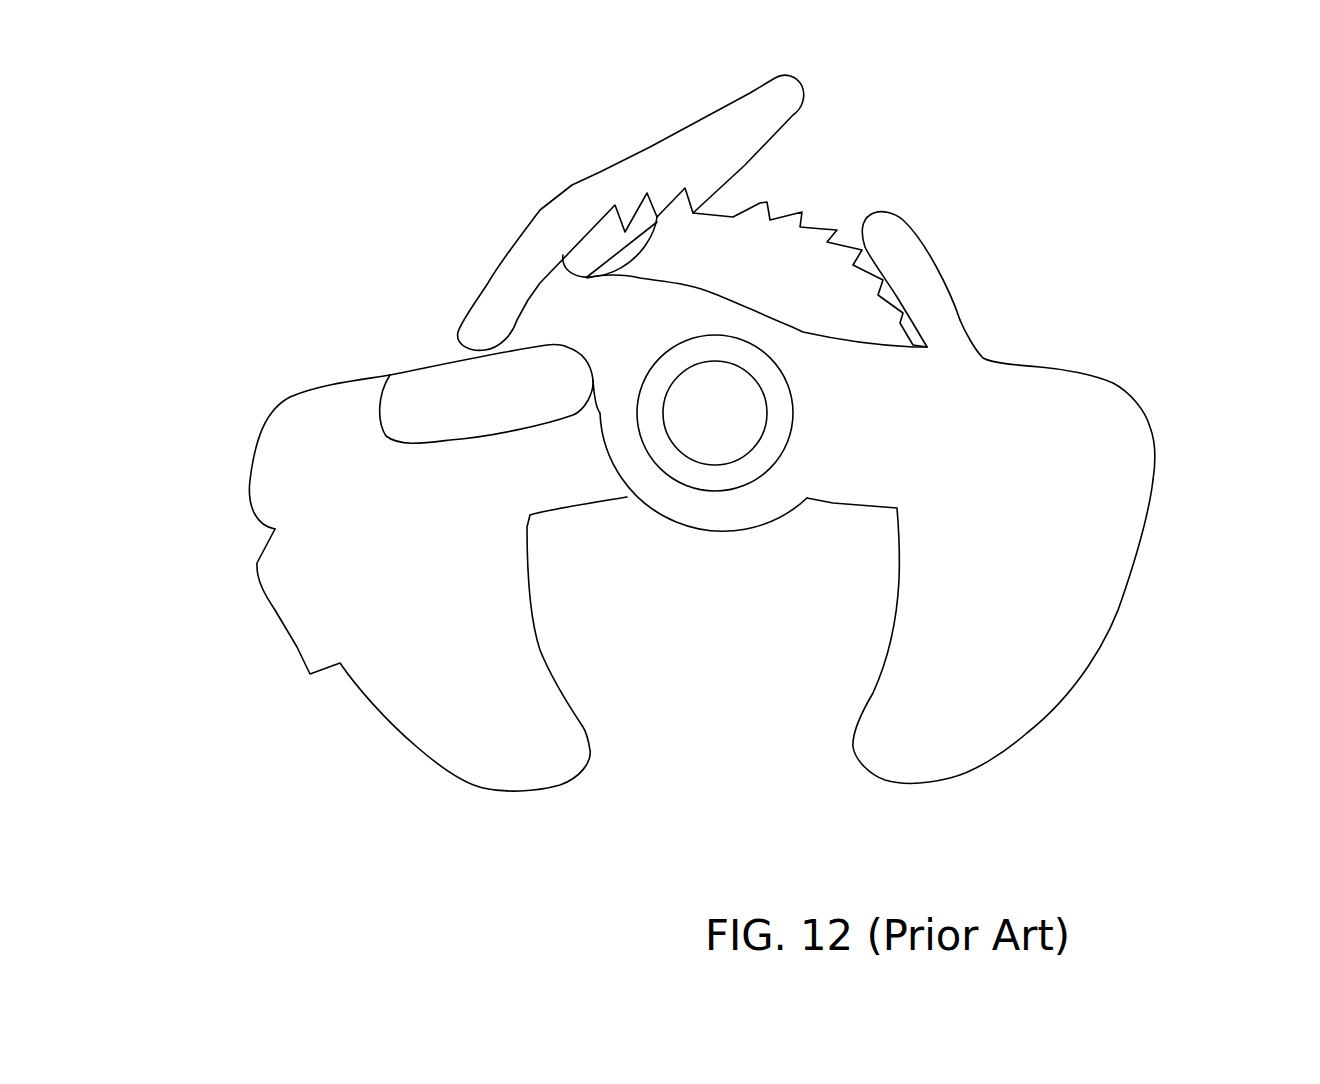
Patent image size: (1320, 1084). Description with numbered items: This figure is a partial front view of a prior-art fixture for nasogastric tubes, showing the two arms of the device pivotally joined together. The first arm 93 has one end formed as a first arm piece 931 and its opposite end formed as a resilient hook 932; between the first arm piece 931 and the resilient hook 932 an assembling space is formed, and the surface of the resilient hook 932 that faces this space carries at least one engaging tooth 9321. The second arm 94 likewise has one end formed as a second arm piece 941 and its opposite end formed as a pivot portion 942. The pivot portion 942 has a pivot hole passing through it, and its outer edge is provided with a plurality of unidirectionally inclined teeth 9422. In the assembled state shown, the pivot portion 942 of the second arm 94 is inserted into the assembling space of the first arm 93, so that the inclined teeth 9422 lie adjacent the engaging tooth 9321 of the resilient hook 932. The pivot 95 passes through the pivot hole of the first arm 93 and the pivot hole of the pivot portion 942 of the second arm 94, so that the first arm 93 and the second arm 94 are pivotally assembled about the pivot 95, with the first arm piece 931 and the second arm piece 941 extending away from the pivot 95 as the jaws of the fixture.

The first arm 93 is at (1180, 463).
The first arm piece 931 is at (1007, 652).
The resilient hook 932 is at (683, 138).
The engaging tooth 9321 is at (605, 276).
The second arm 94 is at (228, 461).
The second arm piece 941 is at (430, 675).
The pivot portion 942 is at (822, 305).
The unidirectionally inclined teeth 9422 is at (823, 232).
The pivot 95 is at (715, 503).